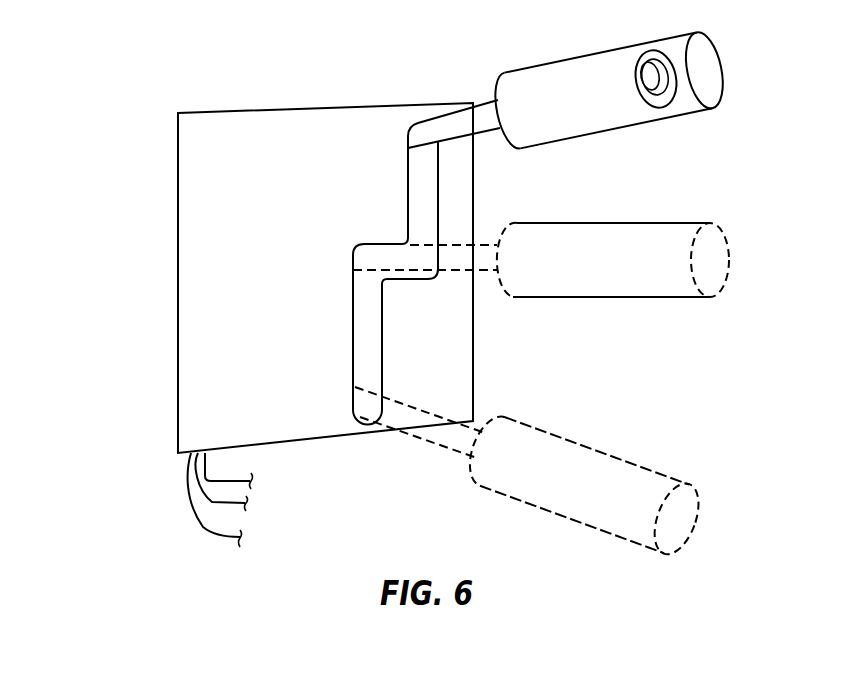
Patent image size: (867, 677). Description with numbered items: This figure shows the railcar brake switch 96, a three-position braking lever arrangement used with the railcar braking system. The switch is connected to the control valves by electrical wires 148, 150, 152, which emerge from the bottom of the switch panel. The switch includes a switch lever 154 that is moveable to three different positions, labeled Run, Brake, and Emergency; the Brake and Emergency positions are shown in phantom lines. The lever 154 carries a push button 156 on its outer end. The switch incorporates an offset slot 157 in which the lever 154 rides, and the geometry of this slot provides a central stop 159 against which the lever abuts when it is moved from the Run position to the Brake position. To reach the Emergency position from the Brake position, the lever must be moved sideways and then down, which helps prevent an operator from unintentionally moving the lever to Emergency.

The railcar brake switch 96 is at (152, 307).
The electrical wire 148 is at (227, 481).
The electrical wire 150 is at (228, 522).
The electrical wire 152 is at (203, 532).
The switch lever 154 is at (575, 73).
The push button 156 is at (665, 98).
The offset slot 157 is at (427, 208).
The central stop 159 is at (403, 280).